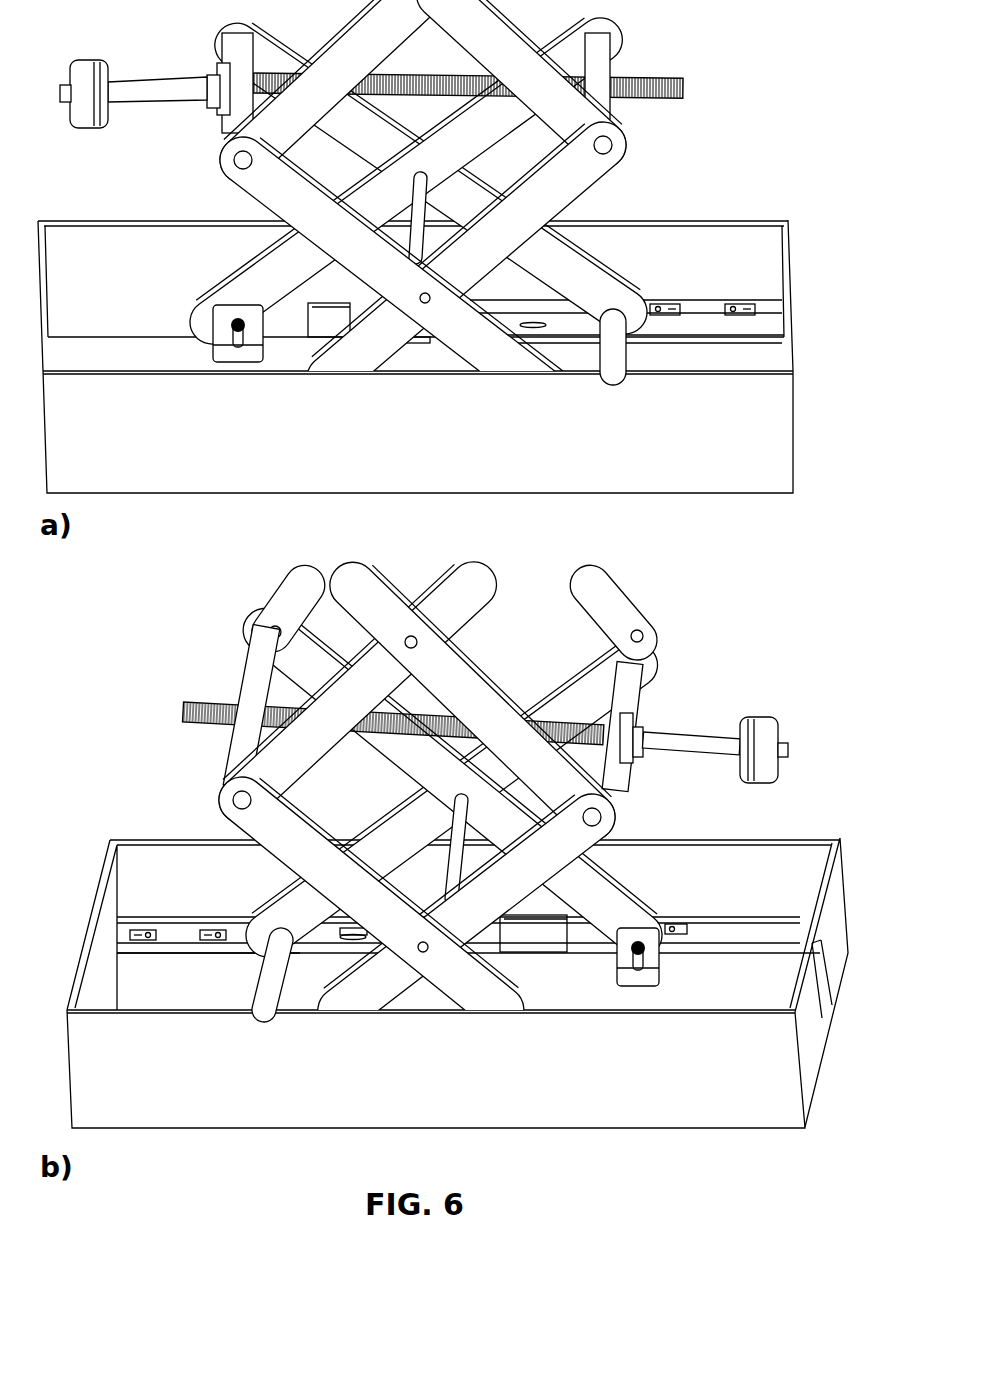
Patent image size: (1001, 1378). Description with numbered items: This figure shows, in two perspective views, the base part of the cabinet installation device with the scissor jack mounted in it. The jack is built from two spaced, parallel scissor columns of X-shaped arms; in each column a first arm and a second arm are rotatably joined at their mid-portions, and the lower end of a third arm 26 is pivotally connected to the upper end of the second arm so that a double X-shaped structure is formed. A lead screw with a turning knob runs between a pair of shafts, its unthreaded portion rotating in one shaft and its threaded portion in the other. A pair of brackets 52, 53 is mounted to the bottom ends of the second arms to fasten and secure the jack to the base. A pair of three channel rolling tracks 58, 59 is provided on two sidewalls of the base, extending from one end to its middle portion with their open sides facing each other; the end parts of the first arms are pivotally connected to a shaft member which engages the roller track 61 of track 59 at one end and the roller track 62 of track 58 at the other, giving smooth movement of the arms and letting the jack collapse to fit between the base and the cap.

The third arm 26 is at (620, 146).
The bracket 52 is at (657, 975).
The bracket 53 is at (220, 348).
The 3 channel rolling track 58 is at (747, 308).
The 3 channel rolling track 59 is at (153, 920).
The roller track 61 is at (533, 937).
The roller track 62 is at (327, 320).